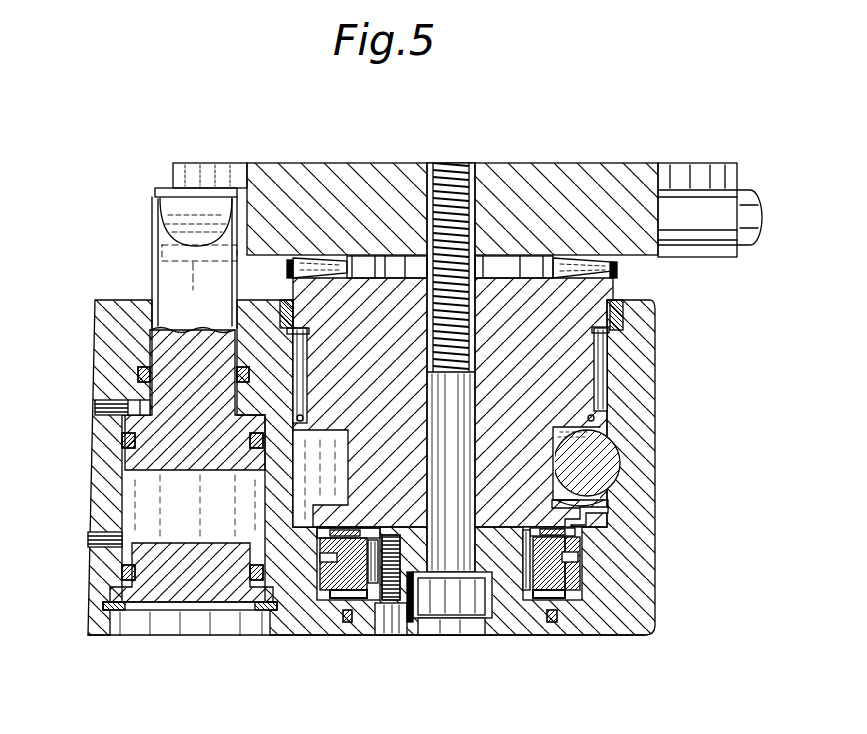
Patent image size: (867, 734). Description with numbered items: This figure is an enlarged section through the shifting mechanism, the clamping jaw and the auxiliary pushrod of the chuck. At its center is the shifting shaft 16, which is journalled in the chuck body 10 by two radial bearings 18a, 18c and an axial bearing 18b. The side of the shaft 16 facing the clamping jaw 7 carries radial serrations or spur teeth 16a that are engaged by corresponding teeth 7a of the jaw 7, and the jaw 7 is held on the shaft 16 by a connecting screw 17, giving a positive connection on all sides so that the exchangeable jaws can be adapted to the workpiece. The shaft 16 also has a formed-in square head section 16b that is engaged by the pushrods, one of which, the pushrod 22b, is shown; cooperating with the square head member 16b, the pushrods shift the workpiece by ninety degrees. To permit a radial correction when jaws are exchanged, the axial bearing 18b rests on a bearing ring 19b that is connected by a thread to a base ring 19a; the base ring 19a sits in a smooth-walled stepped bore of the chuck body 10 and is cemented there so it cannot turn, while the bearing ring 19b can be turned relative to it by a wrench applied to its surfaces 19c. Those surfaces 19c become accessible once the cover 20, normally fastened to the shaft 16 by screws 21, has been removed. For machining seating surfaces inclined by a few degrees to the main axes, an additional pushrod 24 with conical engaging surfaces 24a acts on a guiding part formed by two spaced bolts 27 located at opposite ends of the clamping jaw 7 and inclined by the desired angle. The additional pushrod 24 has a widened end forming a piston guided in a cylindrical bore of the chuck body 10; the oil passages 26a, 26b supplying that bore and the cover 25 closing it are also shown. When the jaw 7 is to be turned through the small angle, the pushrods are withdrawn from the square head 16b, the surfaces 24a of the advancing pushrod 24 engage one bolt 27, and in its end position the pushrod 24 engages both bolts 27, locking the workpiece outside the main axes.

The clamping jaw 7 is at (285, 170).
The teeth of the clamping jaw 7a is at (287, 268).
The chuck body 10 is at (117, 300).
The shifting shaft 16 is at (602, 298).
The radial serrations or spur teeth 16a is at (619, 267).
The square head section 16b is at (346, 469).
The connecting screw 17 is at (452, 208).
The radial bearing 18a is at (608, 345).
The axial bearing 18b is at (576, 531).
The radial bearing 18c is at (525, 600).
The base ring 19a is at (578, 592).
The bearing ring 19b is at (350, 599).
The wrench surfaces 19c is at (548, 599).
The cover 20 is at (494, 636).
The screws 21 is at (392, 604).
The pushrod 22b is at (621, 463).
The additional pushrod 24 is at (195, 328).
The conical engaging surfaces 24a is at (177, 234).
The cover 25 is at (180, 548).
The oil passage 26a is at (95, 408).
The oil passage 26b is at (88, 540).
The bolts 27 is at (157, 192).